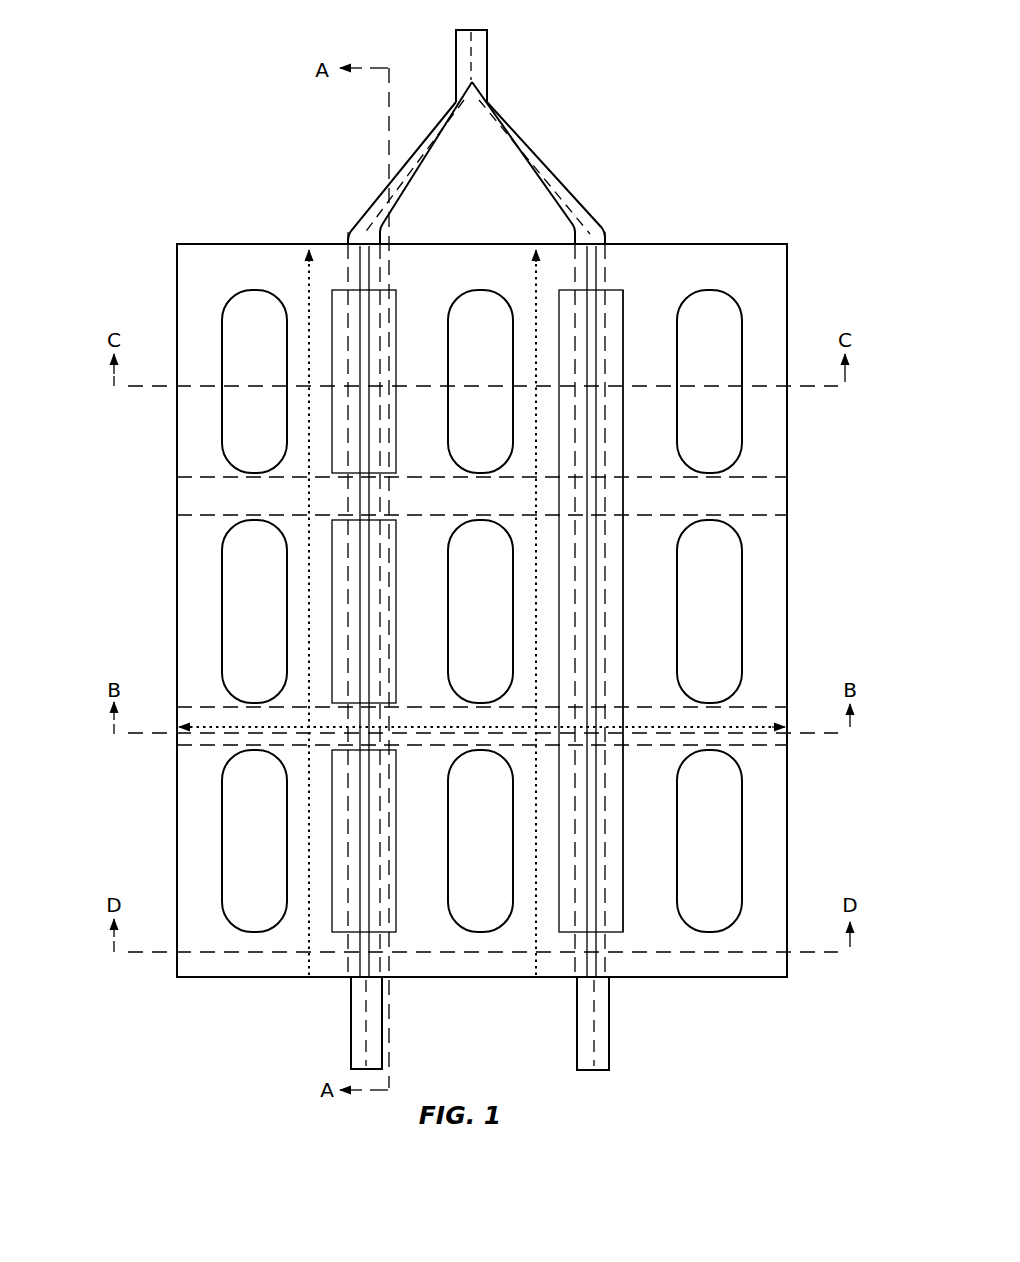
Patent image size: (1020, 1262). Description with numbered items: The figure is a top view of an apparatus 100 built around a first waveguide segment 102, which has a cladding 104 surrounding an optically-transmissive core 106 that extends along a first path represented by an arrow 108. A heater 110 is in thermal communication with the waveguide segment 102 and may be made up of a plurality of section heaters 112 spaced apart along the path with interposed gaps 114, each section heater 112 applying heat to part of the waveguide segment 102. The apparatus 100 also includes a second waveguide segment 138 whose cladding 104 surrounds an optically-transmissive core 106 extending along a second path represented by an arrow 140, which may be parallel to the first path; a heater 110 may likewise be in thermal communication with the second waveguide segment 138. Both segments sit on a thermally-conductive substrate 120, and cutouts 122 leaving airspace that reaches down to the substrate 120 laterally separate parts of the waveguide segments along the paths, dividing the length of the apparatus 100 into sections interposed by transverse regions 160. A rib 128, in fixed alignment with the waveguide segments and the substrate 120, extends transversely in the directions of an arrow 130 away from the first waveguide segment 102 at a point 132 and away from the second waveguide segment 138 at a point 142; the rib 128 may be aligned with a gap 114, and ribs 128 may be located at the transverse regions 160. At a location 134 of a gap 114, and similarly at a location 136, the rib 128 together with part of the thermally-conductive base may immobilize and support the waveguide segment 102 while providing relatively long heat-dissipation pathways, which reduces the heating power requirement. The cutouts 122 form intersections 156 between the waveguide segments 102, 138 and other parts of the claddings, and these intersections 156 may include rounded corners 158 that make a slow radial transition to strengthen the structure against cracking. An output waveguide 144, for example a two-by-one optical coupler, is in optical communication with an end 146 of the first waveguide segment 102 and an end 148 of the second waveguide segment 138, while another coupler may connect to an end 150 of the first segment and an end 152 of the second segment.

The apparatus 100 is at (694, 119).
The waveguide segment 102 is at (340, 255).
The cladding 104 is at (377, 205).
The optically-transmissive core 106 is at (447, 118).
The arrow 108 is at (307, 287).
The heater 110 is at (402, 291).
The section heaters 112 is at (337, 553).
The gaps 114 is at (215, 497).
The thermally-conductive substrate 120 is at (236, 345).
The cutouts 122 is at (452, 296).
The rib 128 is at (263, 490).
The arrow 130 is at (203, 730).
The point 132 is at (344, 729).
The location 134 is at (173, 714).
The location 136 is at (178, 508).
The second waveguide segment 138 is at (613, 259).
The arrow 140 is at (528, 264).
The point 142 is at (627, 500).
The output waveguide 144 is at (525, 133).
The end 146 is at (353, 236).
The end 148 is at (582, 242).
The end 150 is at (357, 981).
The end 152 is at (585, 982).
The intersections 156 is at (439, 756).
The rounded corners 158 is at (690, 695).
The transverse regions 160 is at (732, 487).